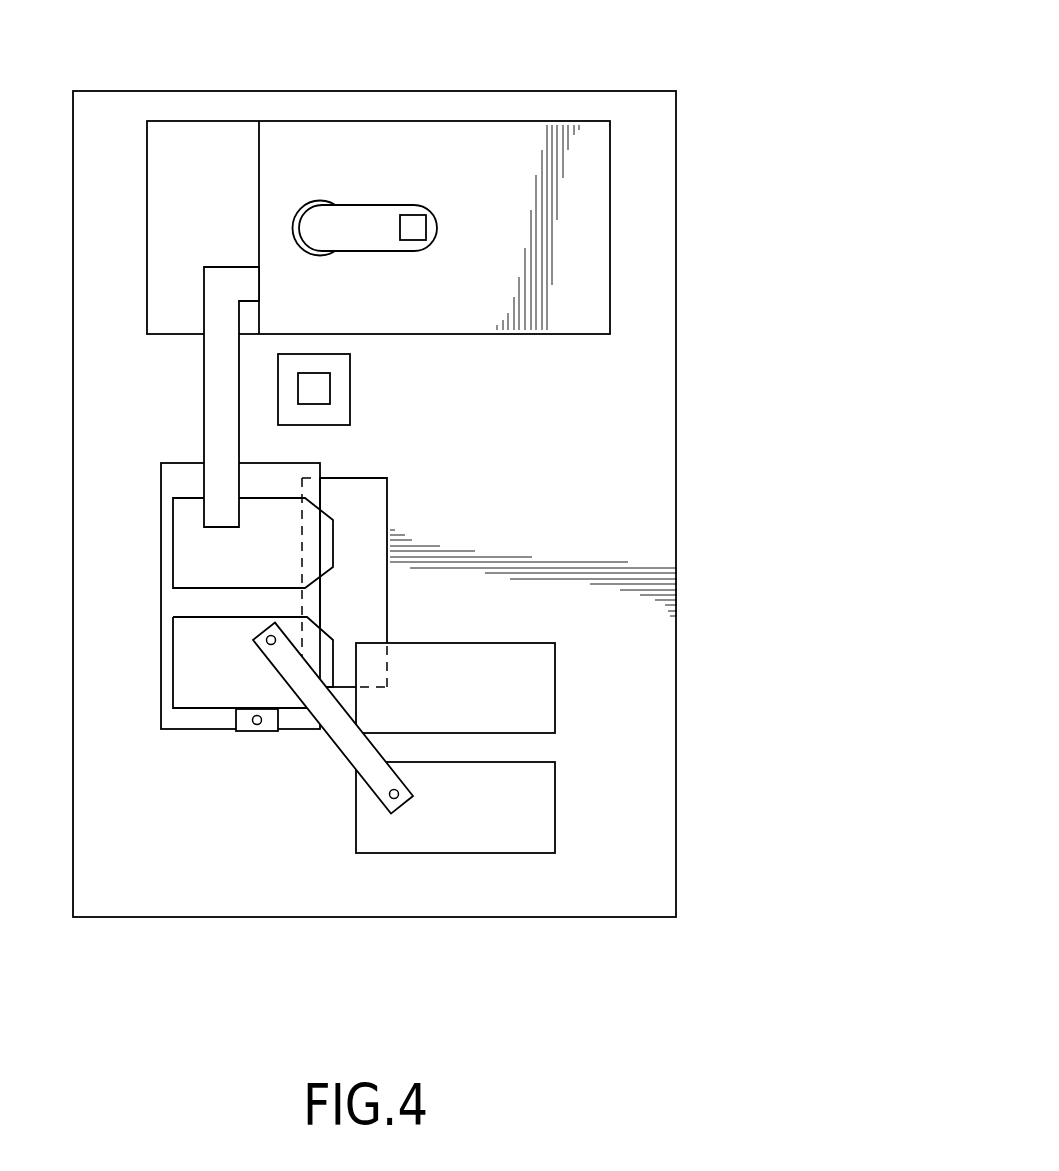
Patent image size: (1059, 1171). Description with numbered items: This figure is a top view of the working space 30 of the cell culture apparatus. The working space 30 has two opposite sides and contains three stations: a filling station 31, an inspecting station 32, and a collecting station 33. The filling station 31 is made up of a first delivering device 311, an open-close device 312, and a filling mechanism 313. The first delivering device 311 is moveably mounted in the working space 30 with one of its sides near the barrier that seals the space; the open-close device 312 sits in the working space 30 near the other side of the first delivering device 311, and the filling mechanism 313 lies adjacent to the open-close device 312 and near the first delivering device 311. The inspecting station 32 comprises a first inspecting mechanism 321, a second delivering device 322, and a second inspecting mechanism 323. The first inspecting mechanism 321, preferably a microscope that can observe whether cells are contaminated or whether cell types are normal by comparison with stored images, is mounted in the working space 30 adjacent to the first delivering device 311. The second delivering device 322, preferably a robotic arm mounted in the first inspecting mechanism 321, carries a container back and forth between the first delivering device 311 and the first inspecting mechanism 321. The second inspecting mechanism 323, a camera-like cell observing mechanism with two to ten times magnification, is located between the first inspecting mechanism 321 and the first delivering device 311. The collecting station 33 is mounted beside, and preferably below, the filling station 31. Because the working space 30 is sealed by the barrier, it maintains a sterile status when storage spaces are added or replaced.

The working space 30 is at (597, 78).
The filling station 31 is at (308, 765).
The first delivering device 311 is at (173, 731).
The open-close device 312 is at (515, 657).
The filling mechanism 313 is at (540, 812).
The inspecting station 32 is at (618, 252).
The first inspecting mechanism 321 is at (320, 140).
The second delivering device 322 is at (218, 423).
The second inspecting mechanism 323 is at (338, 392).
The collecting station 33 is at (385, 507).